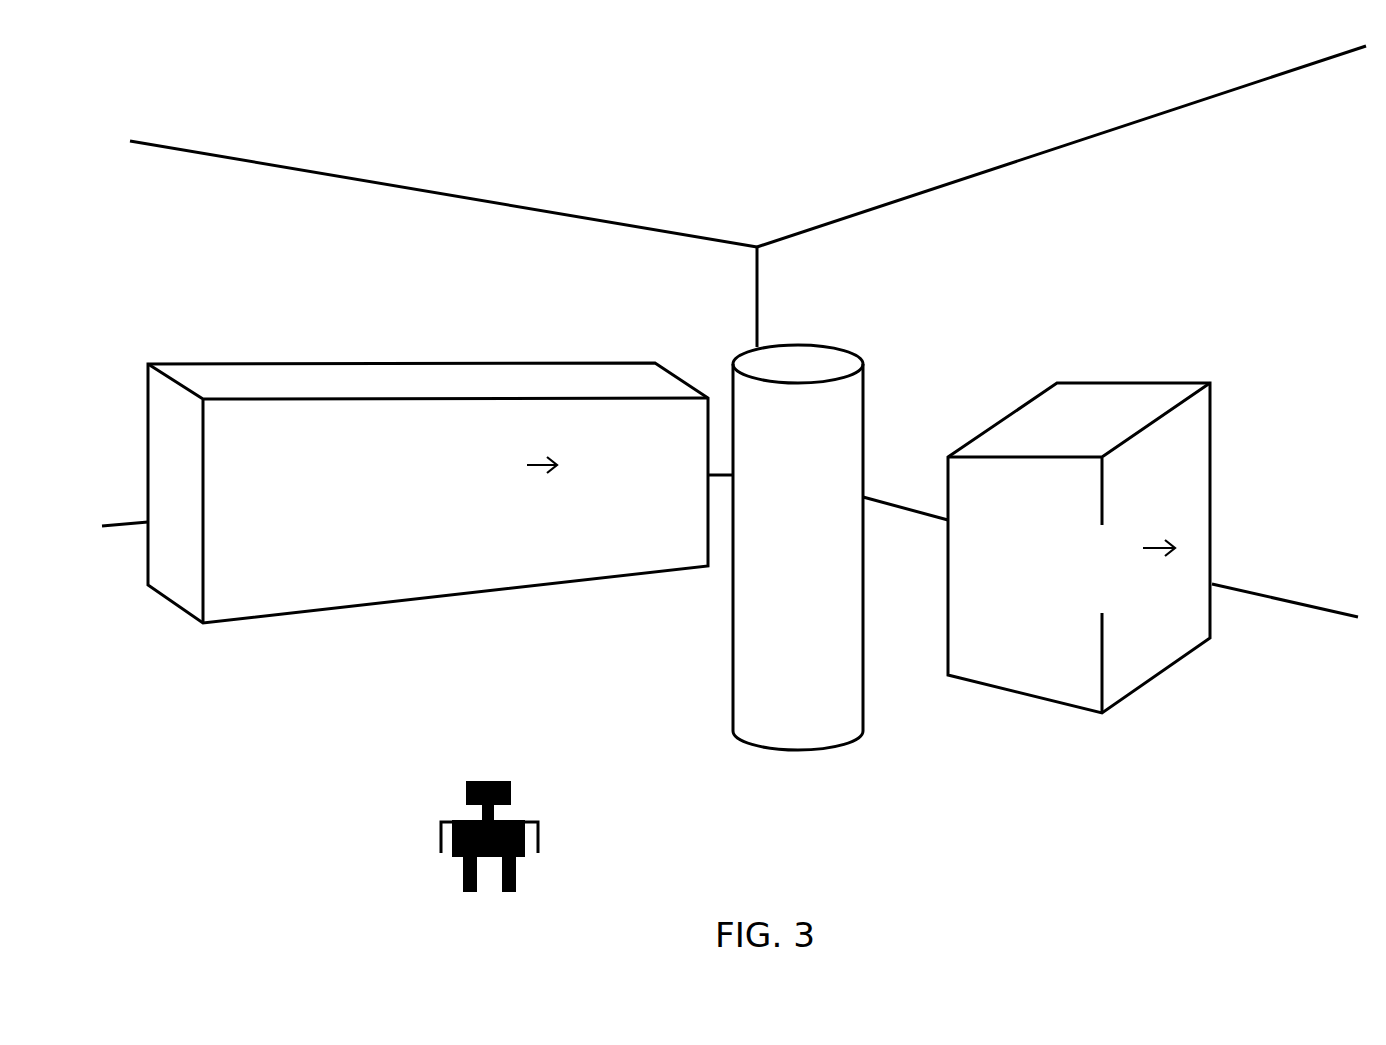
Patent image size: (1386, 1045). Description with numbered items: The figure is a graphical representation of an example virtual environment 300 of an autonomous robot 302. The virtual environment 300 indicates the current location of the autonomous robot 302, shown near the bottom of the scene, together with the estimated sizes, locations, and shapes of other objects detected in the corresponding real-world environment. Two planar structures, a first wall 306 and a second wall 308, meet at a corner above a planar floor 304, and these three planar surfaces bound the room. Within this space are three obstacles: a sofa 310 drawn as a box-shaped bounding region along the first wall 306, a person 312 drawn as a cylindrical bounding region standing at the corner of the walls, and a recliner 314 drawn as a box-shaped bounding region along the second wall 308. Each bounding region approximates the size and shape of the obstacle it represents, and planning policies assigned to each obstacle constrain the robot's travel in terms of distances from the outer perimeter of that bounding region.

The virtual environment 300 is at (238, 62).
The autonomous robot 302 is at (548, 842).
The floor 304 is at (588, 697).
The first wall 306 is at (370, 302).
The second wall 308 is at (988, 302).
The sofa 310 is at (357, 475).
The person 312 is at (733, 639).
The recliner 314 is at (996, 690).